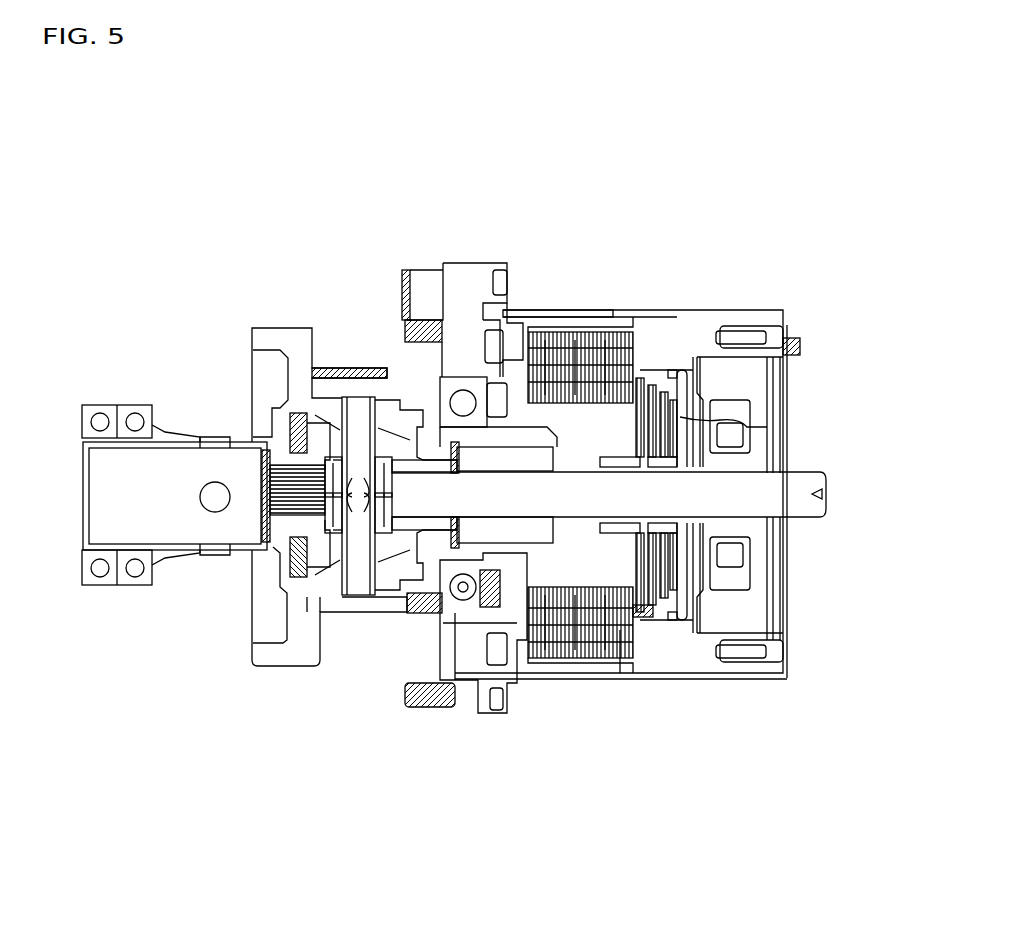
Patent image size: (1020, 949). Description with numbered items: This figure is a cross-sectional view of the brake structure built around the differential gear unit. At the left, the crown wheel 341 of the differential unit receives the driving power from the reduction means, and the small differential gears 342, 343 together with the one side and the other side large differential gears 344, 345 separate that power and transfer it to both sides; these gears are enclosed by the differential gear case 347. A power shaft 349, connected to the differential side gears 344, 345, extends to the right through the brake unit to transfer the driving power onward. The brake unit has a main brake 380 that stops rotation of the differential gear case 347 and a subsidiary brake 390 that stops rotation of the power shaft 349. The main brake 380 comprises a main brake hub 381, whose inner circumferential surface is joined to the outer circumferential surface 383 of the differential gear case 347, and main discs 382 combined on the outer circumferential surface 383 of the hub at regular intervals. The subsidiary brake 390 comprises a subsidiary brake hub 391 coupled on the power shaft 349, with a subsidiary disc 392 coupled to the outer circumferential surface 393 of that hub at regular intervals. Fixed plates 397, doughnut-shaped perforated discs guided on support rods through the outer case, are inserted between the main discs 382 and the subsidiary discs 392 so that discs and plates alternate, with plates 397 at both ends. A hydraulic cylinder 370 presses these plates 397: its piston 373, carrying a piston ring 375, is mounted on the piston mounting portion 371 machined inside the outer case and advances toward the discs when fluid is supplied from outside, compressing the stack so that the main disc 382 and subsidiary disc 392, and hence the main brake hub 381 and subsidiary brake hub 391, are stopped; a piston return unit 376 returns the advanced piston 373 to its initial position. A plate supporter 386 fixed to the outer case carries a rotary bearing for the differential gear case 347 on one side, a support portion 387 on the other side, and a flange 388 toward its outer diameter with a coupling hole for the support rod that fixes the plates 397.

The crown wheel 341 is at (250, 327).
The small differential gear 342 is at (372, 395).
The small differential gear 343 is at (320, 663).
The one side large differential gear 344 is at (314, 529).
The the other side large differential gear 345 is at (410, 272).
The differential gear case 347 is at (437, 426).
The power shaft 349 is at (640, 614).
The hydraulic cylinder 370 is at (705, 466).
The piston mounting portion 371 is at (620, 312).
The piston 373 is at (675, 369).
The piston ring 375 is at (790, 369).
The piston return unit 376 is at (773, 409).
The main brake 380 is at (530, 576).
The main brake hub 381 is at (466, 659).
The main disc 382 is at (600, 627).
The outer circumferential surface 383 is at (565, 495).
The plate supporter 386 is at (510, 304).
The support portion 387 is at (507, 277).
The flange 388 is at (518, 367).
The subsidiary brake 390 is at (731, 405).
The subsidiary brake hub 391 is at (639, 369).
The subsidiary disc 392 is at (605, 360).
The outer circumferential surface 393 is at (720, 645).
The fixed plate 397 is at (515, 333).